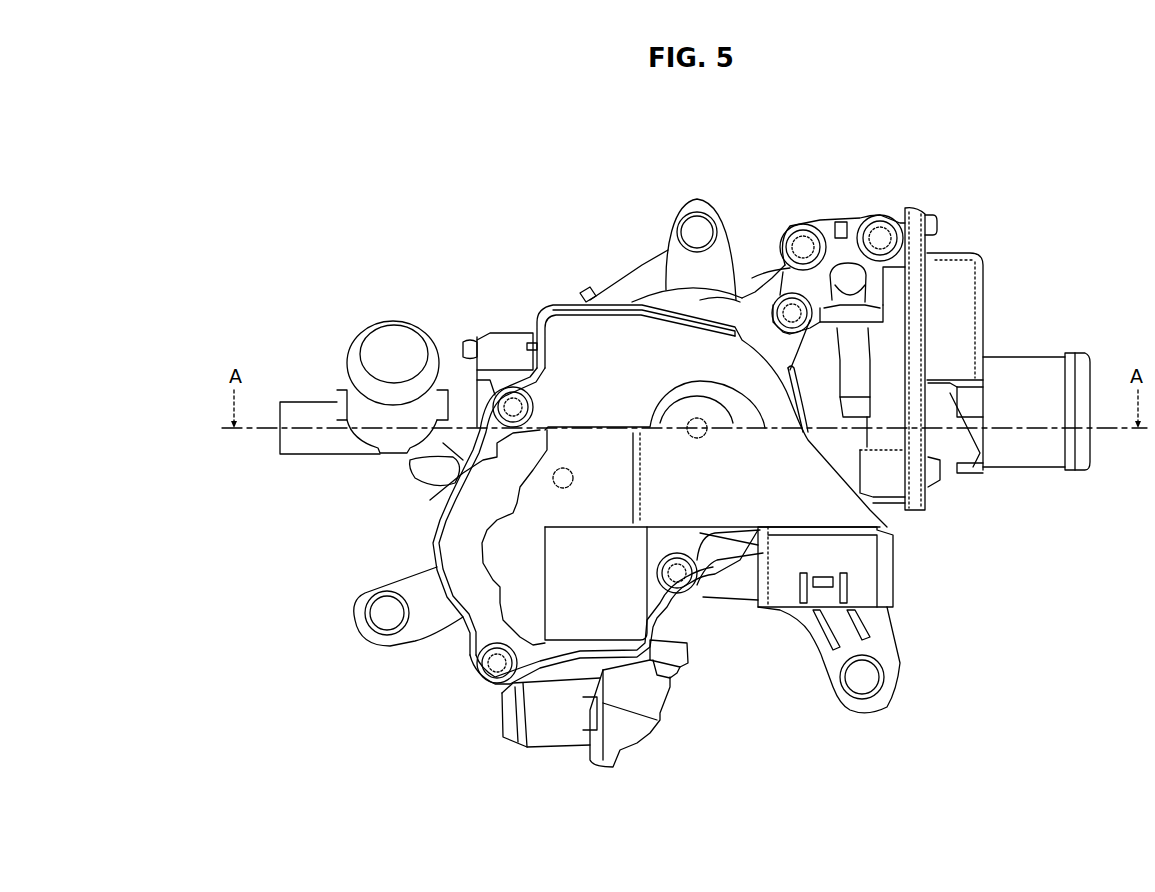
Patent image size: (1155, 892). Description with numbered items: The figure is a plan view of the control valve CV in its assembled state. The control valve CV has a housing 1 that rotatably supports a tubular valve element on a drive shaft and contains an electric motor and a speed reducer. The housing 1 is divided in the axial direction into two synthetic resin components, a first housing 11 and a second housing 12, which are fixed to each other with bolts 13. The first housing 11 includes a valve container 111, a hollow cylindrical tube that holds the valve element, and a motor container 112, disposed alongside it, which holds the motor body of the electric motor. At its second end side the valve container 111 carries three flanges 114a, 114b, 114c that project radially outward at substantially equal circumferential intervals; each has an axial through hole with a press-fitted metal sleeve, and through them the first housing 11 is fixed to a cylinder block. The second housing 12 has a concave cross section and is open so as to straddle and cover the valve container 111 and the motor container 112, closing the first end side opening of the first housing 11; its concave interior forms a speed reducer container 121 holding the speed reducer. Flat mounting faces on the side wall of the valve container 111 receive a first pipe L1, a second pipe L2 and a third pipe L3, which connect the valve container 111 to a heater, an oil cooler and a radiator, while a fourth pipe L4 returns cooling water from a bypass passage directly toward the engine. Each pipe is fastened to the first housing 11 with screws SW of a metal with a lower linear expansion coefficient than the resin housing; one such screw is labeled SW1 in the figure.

The housing 1 is at (640, 158).
The first housing 11 is at (657, 275).
The second housing 12 is at (555, 288).
The bolts 13 is at (803, 240).
The valve container 111 is at (722, 295).
The motor container 112 is at (447, 526).
The flange 114a is at (878, 647).
The flange 114b is at (423, 625).
The flange 114c is at (694, 197).
The speed reducer container 121 is at (553, 347).
The screws SW is at (788, 228).
The seal/fitting SW1 is at (470, 375).
The control valve CV is at (980, 210).
The first pipe L1 is at (360, 403).
The second pipe L2 is at (557, 740).
The third pipe L3 is at (1018, 376).
The fourth pipe L4 is at (858, 362).